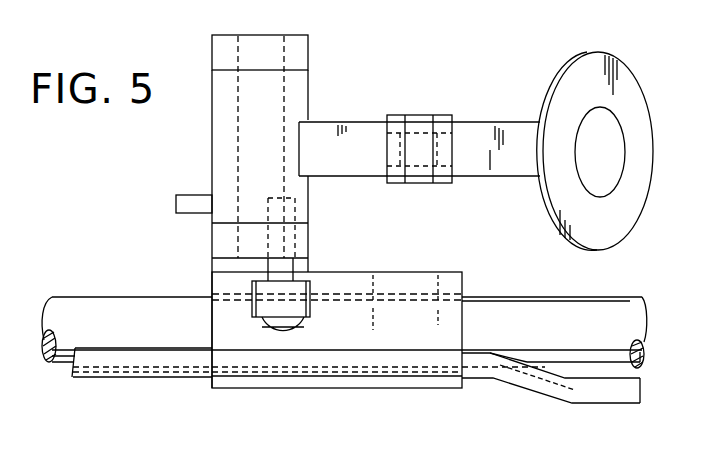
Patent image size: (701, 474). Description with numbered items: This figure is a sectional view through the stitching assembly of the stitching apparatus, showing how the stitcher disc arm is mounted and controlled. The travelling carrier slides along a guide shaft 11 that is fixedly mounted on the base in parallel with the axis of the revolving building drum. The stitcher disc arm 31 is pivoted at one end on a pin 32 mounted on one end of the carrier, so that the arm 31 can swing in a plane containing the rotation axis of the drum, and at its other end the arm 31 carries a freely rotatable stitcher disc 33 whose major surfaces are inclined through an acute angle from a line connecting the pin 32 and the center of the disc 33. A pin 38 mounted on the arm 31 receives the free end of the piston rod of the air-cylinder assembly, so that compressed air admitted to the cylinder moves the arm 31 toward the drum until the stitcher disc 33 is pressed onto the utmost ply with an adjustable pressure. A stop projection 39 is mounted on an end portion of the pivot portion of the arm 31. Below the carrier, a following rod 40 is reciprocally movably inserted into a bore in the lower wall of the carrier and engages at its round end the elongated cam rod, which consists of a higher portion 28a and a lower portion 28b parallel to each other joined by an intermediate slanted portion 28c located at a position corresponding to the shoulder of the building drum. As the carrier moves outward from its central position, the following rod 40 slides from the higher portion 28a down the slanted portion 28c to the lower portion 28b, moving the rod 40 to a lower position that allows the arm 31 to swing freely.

The guide shaft 11 is at (146, 296).
The higher portion of cam rod 28a is at (130, 377).
The lower portion of cam rod 28b is at (600, 404).
The intermediate slanted portion of cam rod 28c is at (494, 384).
The stitcher disc arm 31 is at (480, 126).
The pin 32 is at (275, 52).
The stitcher disc 33 is at (563, 82).
The pin 38 is at (425, 116).
The stop projection 39 is at (178, 204).
The following rod 40 is at (300, 268).